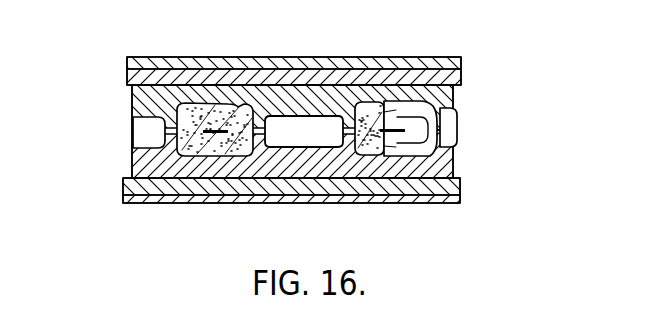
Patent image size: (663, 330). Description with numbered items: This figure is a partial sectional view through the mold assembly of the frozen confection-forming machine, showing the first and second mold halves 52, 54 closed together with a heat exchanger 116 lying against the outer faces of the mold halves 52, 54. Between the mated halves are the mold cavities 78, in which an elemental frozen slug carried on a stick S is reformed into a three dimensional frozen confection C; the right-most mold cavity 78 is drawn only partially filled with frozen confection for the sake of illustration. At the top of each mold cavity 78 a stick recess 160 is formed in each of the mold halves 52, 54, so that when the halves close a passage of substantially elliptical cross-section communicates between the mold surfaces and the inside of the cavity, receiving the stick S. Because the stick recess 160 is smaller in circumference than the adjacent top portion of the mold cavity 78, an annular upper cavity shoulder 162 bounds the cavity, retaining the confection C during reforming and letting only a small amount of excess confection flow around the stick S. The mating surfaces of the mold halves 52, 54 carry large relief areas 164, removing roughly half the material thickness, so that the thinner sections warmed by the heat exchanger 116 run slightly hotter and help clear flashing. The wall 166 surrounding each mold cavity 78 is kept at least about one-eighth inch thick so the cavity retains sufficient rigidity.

The first mold half 52 is at (132, 92).
The second mold half 54 is at (132, 162).
The mold cavity 78 is at (236, 105).
The heat exchanger 116 is at (461, 77).
The stick recess 160 is at (411, 145).
The upper cavity shoulder 162 is at (457, 142).
The relief areas 164 is at (137, 142).
The wall 166 is at (267, 132).
The frozen confection C is at (193, 106).
The stick S is at (182, 156).